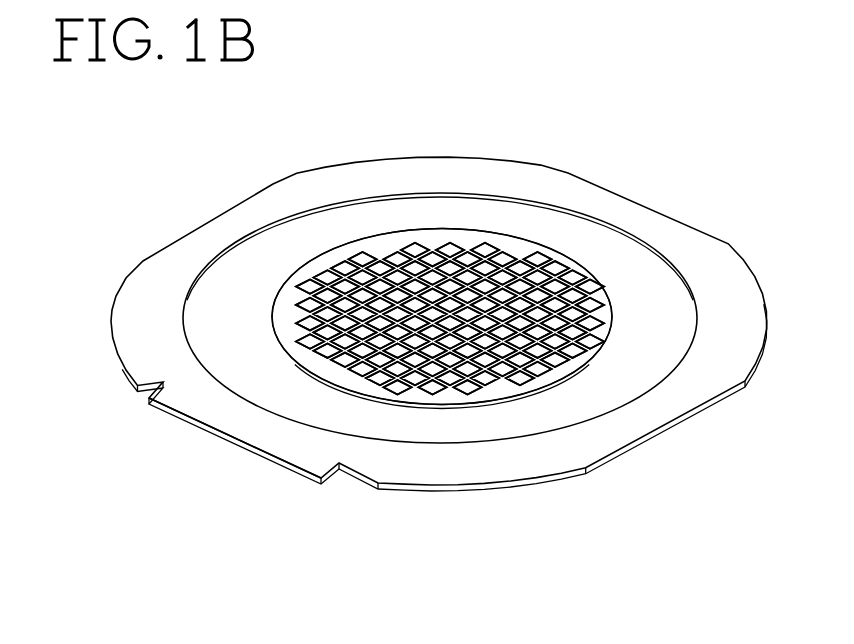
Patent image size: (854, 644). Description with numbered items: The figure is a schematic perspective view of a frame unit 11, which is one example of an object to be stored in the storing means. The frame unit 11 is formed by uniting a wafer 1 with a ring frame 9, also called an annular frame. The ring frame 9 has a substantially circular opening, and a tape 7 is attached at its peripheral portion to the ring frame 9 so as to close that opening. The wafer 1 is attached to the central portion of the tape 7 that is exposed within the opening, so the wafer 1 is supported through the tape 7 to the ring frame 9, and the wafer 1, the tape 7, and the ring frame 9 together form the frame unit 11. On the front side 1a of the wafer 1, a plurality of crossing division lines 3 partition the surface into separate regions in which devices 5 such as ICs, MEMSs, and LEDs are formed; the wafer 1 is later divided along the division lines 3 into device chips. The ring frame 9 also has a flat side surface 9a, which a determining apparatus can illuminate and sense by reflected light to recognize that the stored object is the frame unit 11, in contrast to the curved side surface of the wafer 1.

The wafer 1 is at (568, 250).
The front side 1a is at (437, 231).
The division lines 3 is at (307, 293).
The devices 5 is at (382, 268).
The tape 7 is at (657, 278).
The ring frame 9 is at (158, 292).
The flat side surface 9a is at (240, 438).
The frame unit 11 is at (289, 166).